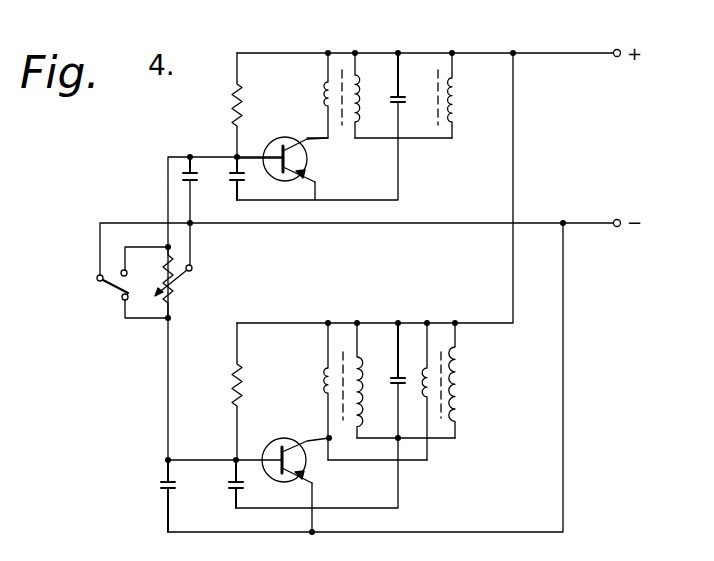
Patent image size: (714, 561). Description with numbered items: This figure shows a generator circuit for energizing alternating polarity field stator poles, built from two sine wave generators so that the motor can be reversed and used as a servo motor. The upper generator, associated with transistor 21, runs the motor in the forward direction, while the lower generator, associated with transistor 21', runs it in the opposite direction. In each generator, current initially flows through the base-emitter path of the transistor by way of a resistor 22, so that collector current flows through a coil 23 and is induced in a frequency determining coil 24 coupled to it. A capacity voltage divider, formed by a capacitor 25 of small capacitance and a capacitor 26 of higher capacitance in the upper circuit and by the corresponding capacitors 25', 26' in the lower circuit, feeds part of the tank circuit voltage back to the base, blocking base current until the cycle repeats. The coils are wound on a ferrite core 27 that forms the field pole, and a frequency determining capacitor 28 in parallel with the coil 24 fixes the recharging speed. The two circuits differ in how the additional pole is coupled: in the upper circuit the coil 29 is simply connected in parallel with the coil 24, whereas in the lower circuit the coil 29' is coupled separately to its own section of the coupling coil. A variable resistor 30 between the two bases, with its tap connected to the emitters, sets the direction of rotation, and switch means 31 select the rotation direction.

The transistor 21 is at (295, 167).
The transistor 21' is at (309, 467).
The resistor 22 is at (236, 94).
The coil 23 is at (325, 87).
The frequency determining coil 24 is at (360, 103).
The capacitor 25 is at (223, 189).
The capacitor 25' is at (210, 492).
The capacitor 26 is at (158, 186).
The capacitor 26' is at (134, 501).
The ferrite core 27 is at (340, 127).
The frequency determining capacitor 28 is at (401, 97).
The coil 29 is at (469, 95).
The coil 29' is at (478, 380).
The variable resistor 30 is at (174, 283).
The switch means 31 is at (110, 288).